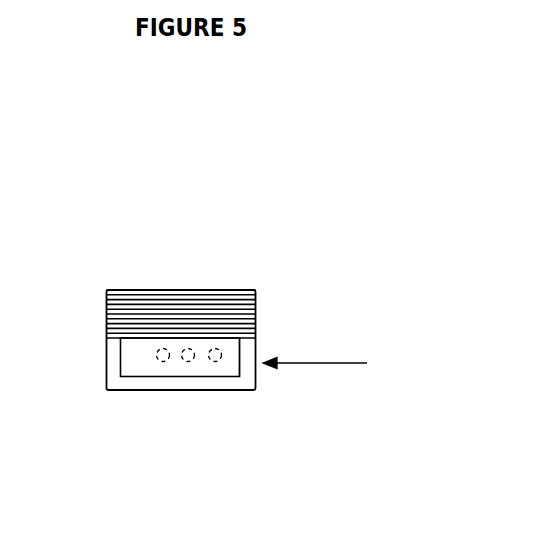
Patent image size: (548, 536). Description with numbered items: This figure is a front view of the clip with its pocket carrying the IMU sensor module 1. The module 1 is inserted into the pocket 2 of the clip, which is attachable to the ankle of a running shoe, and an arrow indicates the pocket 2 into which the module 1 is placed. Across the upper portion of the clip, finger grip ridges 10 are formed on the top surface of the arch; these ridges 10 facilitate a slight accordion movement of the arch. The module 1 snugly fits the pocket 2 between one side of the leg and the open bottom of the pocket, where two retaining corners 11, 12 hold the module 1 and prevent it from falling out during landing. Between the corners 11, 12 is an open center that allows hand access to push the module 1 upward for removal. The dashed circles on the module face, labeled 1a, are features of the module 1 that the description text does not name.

The IMU sensor module 1 is at (151, 340).
The indicator lights 1a is at (155, 353).
The pocket 2 is at (327, 365).
The finger grip ridges 10 is at (188, 316).
The retaining corner 11 is at (122, 383).
The retaining corner 12 is at (237, 375).